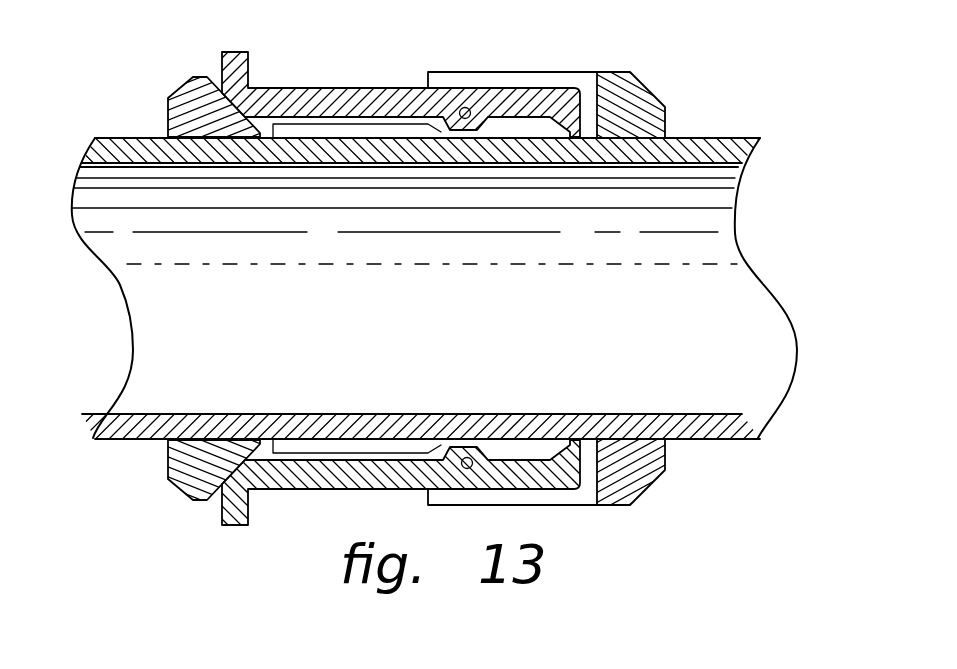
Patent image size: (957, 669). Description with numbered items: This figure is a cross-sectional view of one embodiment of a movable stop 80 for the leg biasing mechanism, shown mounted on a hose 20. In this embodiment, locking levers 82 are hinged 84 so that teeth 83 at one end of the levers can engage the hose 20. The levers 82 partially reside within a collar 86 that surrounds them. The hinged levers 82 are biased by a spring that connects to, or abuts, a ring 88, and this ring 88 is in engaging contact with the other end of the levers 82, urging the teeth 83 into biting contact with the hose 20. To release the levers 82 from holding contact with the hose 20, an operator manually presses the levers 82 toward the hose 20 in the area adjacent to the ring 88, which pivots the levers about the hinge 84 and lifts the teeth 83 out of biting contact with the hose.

The hose 20 is at (720, 137).
The movable stop 80 is at (801, 227).
The locking levers 82 is at (328, 89).
The teeth 83 is at (580, 134).
The hinge 84 is at (469, 457).
The collar 86 is at (645, 90).
The ring 88 is at (173, 90).